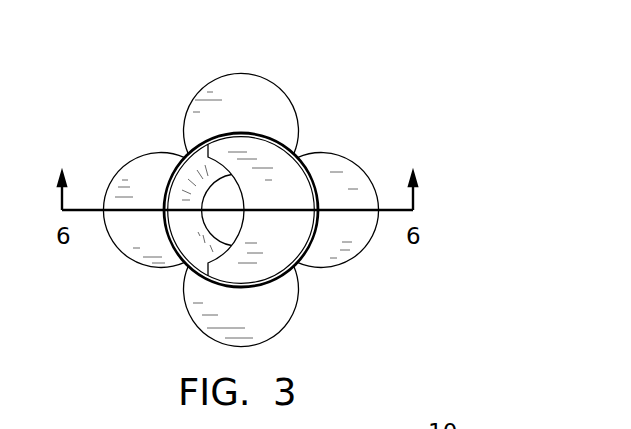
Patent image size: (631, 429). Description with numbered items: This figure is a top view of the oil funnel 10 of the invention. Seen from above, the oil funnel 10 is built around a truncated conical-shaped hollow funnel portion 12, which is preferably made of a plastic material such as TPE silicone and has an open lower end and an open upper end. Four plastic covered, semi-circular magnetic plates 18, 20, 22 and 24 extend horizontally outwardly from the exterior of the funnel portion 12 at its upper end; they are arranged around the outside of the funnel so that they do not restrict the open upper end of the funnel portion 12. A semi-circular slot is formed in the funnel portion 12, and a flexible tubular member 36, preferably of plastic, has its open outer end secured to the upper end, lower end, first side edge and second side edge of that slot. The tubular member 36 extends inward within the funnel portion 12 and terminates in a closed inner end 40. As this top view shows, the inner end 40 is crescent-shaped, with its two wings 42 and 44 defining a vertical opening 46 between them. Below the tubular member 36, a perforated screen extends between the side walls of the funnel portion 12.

The oil funnel 10 is at (270, 65).
The funnel portion 12 is at (305, 255).
The magnetic plate 18 is at (281, 331).
The magnetic plate 20 is at (128, 162).
The magnetic plate 22 is at (217, 78).
The magnetic plate 24 is at (369, 240).
The flexible tubular member 36 is at (298, 190).
The inner end 40 is at (247, 196).
The wing 42 is at (217, 276).
The wing 44 is at (213, 146).
The vertical opening 46 is at (226, 221).